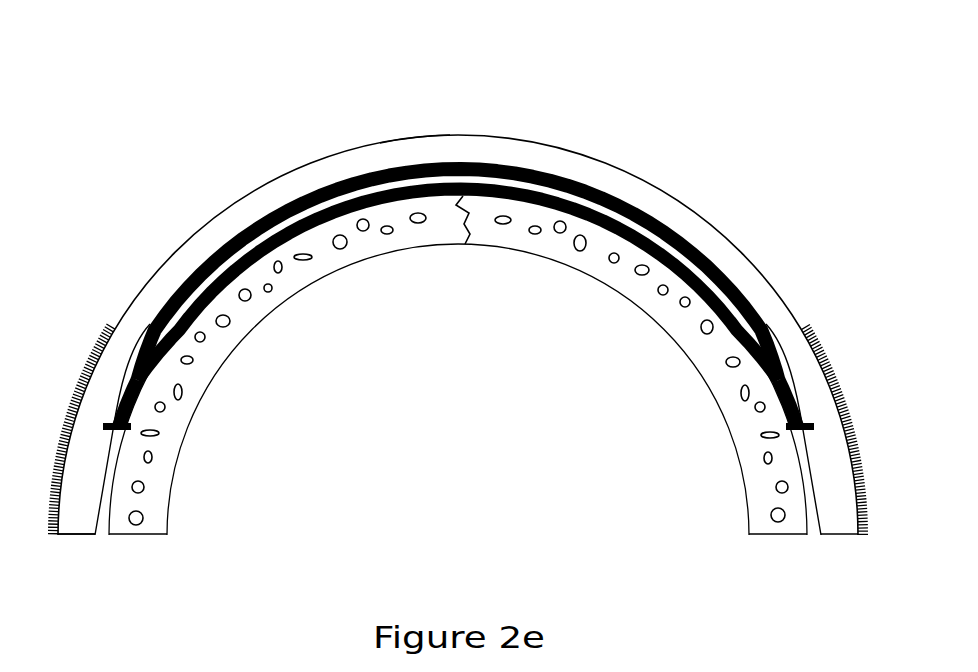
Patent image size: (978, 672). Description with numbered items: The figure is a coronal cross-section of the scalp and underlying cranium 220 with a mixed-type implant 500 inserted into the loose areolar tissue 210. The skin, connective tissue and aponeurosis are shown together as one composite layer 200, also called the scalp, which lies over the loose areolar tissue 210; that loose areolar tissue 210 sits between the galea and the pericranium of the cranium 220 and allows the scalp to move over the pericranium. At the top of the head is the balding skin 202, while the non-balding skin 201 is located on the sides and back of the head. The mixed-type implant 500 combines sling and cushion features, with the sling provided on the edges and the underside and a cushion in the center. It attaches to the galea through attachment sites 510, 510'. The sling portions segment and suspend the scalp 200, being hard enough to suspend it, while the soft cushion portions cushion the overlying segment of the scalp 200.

The composite layer 200 is at (313, 177).
The non-balding skin 201 is at (830, 360).
The balding skin 202 is at (413, 136).
The loose areolar tissue 210 is at (102, 534).
The cranium 220 is at (322, 258).
The mixed-type implant 500 is at (644, 200).
The attachment site 510 is at (189, 464).
The attachment site 510' is at (719, 464).